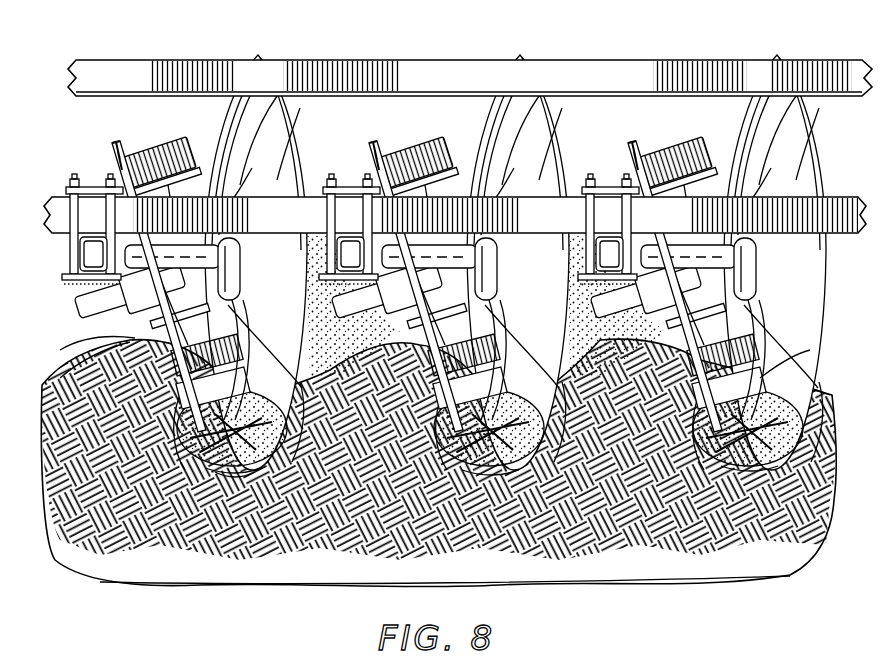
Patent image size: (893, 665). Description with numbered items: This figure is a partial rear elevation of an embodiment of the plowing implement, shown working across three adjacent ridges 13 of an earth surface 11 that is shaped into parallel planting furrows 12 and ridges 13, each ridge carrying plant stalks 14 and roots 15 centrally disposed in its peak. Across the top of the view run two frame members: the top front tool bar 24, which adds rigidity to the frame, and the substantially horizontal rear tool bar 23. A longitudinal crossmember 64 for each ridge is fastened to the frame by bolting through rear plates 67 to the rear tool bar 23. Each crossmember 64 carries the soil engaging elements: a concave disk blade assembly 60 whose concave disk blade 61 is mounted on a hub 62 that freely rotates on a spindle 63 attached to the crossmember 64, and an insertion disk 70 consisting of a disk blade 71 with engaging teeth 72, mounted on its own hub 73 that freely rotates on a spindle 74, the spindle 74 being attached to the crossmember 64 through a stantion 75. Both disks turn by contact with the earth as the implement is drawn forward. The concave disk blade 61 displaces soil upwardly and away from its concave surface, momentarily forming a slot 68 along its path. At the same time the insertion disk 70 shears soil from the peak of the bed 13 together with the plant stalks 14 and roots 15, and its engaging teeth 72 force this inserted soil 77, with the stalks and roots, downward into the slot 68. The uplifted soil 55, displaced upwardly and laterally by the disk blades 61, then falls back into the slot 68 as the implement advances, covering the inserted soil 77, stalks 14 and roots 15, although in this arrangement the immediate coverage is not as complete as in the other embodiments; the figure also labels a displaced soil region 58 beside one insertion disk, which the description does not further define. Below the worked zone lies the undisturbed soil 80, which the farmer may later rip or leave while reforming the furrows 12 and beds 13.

The earth surface 11 is at (808, 358).
The planting furrows 12 is at (52, 386).
The ridges 13 is at (795, 360).
The plant stalks 14 is at (510, 486).
The roots 15 is at (246, 474).
The rear tool bar 23 is at (455, 215).
The top front tool bar 24 is at (150, 76).
The uplifted soil 55 is at (616, 306).
The furrow zone 58 is at (353, 306).
The concave disk blades 60 is at (260, 57).
The concave disk blade 61 is at (525, 141).
The hub 62 is at (240, 276).
The spindle 63 is at (232, 250).
The longitudinal crossmember 64 is at (94, 244).
The rear plates 67 is at (76, 178).
The slot 68 is at (842, 432).
The insertion disk 70 is at (118, 142).
The disk blade 71 is at (113, 160).
The engaging teeth 72 is at (180, 152).
The hub 73 is at (145, 322).
The spindle 74 is at (78, 302).
The stantion 75 is at (84, 296).
The inserted soil 77 is at (218, 470).
The undisturbed soil 80 is at (384, 548).